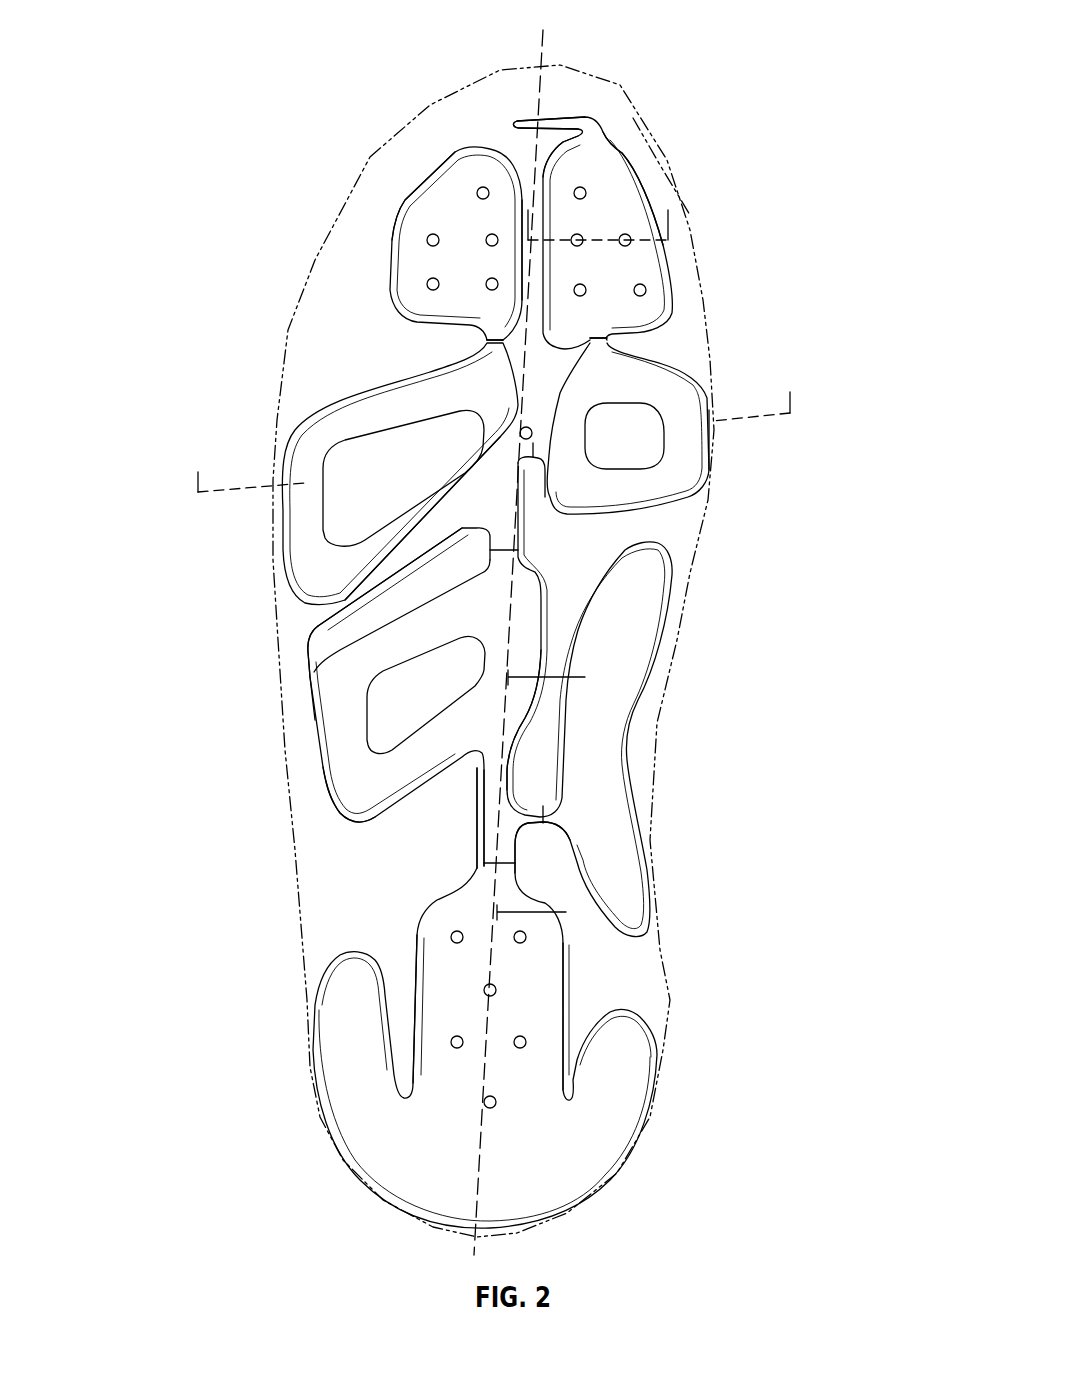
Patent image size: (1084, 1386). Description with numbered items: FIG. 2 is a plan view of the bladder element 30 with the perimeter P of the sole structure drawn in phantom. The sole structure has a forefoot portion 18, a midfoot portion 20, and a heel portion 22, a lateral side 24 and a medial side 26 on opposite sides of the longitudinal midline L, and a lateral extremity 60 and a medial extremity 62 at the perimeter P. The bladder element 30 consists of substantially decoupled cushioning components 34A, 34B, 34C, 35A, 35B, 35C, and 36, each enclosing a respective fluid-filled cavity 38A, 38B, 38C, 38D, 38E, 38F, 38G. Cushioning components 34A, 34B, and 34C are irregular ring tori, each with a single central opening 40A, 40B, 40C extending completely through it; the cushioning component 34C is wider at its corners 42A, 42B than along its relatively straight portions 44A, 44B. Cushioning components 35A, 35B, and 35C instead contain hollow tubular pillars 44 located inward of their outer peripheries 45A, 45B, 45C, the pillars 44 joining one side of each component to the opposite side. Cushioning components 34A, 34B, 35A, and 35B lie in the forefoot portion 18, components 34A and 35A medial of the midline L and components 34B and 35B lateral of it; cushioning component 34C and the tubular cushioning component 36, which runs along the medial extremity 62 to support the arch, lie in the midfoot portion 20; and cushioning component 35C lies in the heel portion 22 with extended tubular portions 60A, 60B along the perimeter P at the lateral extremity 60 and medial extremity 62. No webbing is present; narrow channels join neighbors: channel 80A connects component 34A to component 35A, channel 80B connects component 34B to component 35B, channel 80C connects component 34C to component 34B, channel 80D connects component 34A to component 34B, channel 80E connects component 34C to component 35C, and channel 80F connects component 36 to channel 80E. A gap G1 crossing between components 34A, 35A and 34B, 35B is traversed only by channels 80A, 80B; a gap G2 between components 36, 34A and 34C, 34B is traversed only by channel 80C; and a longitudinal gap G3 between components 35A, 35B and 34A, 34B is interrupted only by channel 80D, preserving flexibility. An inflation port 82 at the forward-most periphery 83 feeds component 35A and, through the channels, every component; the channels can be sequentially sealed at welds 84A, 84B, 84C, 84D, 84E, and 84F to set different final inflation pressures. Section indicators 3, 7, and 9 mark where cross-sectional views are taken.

The forefoot portion 18 is at (718, 200).
The longitudinal midline L is at (543, 32).
The midfoot portion 20 is at (647, 687).
The heel portion 22 is at (673, 1007).
The lateral side 24 is at (297, 787).
The medial side 26 is at (637, 802).
The bladder element 30 is at (645, 79).
The cushioning component 34A is at (680, 387).
The cushioning component 34B is at (303, 435).
The cushioning component 34C is at (313, 693).
The cushioning component 35A is at (670, 250).
The cushioning component 35B is at (483, 328).
The cushioning component 35C is at (453, 1090).
The tubular cushioning component 36 is at (640, 633).
The fluid-filled cavity 38A is at (705, 468).
The fluid-filled cavity 38B is at (300, 495).
The fluid-filled cavity 38C is at (336, 758).
The fluid-filled cavity 38D is at (668, 165).
The fluid-filled cavity 38E is at (400, 213).
The fluid-filled cavity 38F is at (523, 1158).
The fluid-filled cavity 38G is at (603, 775).
The central opening 40A is at (640, 442).
The central opening 40B is at (347, 503).
The central opening 40C is at (383, 698).
The corner 42A is at (325, 677).
The corner 42B is at (353, 802).
The tubular pillars 44 is at (586, 190).
The relatively straight portion 44A is at (413, 613).
The relatively straight portion 44B is at (410, 770).
The outer periphery 45A is at (603, 138).
The outer periphery 45B is at (403, 293).
The outer periphery 45C is at (563, 1018).
The lateral extremity 60 is at (307, 875).
The tubular portion 60A is at (347, 980).
The tubular portion 60B is at (638, 1053).
The medial extremity 62 is at (667, 887).
The channel 80A is at (608, 335).
The channel 80B is at (488, 335).
The channel 80C is at (525, 520).
The channel 80D is at (517, 428).
The channel 80E is at (517, 767).
The channel 80F is at (535, 827).
The inflation port 82 is at (583, 125).
The forward-most periphery 83 is at (550, 113).
The weld 84A is at (493, 863).
The weld 84B is at (548, 820).
The weld 84C is at (612, 369).
The weld 84D is at (481, 375).
The weld 84E is at (510, 548).
The weld 84F is at (585, 430).
The gap G1 is at (637, 328).
The gap G2 is at (630, 527).
The gap G3 is at (527, 165).
The perimeter P is at (668, 920).
The section line 3- 3 is at (494, 424).
The section line 7- 7 is at (598, 207).
The section line 9- 9 is at (553, 796).